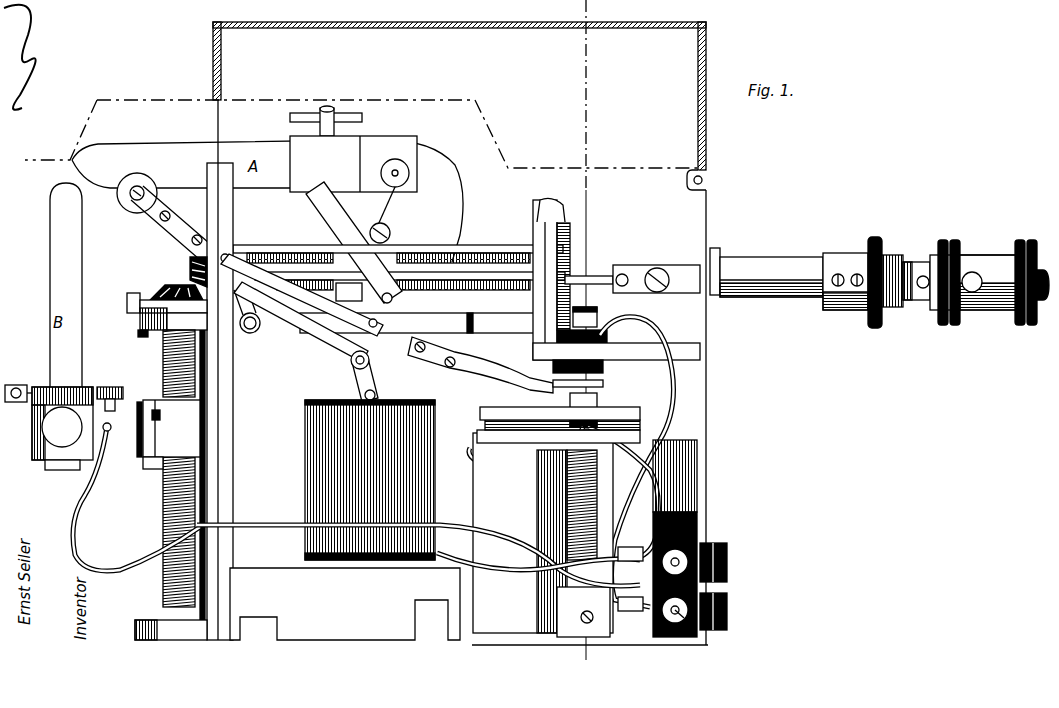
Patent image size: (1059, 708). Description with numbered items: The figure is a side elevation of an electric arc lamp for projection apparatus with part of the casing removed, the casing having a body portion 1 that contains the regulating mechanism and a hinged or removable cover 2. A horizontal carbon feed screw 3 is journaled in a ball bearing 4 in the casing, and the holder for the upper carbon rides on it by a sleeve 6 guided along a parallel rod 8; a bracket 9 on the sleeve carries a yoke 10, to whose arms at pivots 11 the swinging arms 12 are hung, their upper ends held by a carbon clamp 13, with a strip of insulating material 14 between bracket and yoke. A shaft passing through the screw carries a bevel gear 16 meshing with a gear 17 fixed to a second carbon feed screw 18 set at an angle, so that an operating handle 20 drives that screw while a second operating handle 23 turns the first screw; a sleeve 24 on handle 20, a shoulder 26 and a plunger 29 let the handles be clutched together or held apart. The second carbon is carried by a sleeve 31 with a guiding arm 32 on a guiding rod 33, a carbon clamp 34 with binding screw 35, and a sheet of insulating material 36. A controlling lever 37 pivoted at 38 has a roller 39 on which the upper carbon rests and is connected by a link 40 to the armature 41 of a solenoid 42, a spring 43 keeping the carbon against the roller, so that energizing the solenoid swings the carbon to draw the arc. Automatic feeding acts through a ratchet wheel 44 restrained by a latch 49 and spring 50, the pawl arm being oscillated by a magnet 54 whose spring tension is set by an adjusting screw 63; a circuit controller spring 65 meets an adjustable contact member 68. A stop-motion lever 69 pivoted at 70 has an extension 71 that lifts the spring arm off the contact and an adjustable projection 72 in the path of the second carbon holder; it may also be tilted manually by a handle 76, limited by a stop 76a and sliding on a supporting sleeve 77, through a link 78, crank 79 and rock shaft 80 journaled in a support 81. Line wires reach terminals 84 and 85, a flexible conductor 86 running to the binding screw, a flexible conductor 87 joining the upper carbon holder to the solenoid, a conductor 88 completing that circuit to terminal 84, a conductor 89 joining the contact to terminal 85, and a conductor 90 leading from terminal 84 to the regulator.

The body portion 1 is at (707, 470).
The cover 2 is at (487, 29).
The carbon feed screw 3 is at (514, 283).
The ball bearing 4 is at (418, 215).
The sleeve 6 is at (328, 292).
The rod 8 is at (480, 256).
The bracket 9 is at (765, 168).
The yoke 10 is at (62, 375).
The pivots 11 is at (393, 298).
The swinging arms 12 is at (354, 242).
The carbon clamp 13 is at (353, 149).
The insulating material 14 is at (394, 232).
The bevel gear 16 is at (190, 270).
The bevel gear 17 is at (158, 290).
The second carbon feed screw 18 is at (165, 506).
The operating handle 20 is at (1020, 242).
The operating handle 23 is at (952, 242).
The sleeve 24 is at (949, 303).
The shoulder 26 is at (1045, 301).
The plunger 29 is at (972, 290).
The sleeve 31 is at (162, 463).
The guiding arm 32 is at (192, 418).
The guiding rod 33 is at (207, 461).
The carbon clamp 34 is at (78, 396).
The binding screw 35 is at (113, 391).
The insulating material 36 is at (137, 419).
The controlling lever 37 is at (183, 231).
The pivot 38 is at (226, 255).
The roller 39 is at (124, 212).
The link 40 is at (354, 368).
The armature 41 is at (381, 394).
The solenoid 42 is at (370, 480).
The spring 43 is at (389, 219).
The ratchet wheel 44 is at (572, 240).
The latch 49 is at (566, 222).
The spring 50 is at (552, 203).
The magnet 54 is at (604, 500).
The adjusting screw 63 is at (556, 522).
The spring 65 is at (583, 410).
The contact member 68 is at (590, 310).
The lever 69 is at (463, 373).
The pivot 70 is at (375, 330).
The extension 71 is at (603, 384).
The adjustable projection 72 is at (137, 333).
The handle 76 is at (879, 240).
The stop 76a is at (661, 268).
The supporting sleeve 77 is at (777, 258).
The link 78 is at (598, 276).
The crank 79 is at (258, 320).
The rock shaft 80 is at (250, 333).
The support 81 is at (356, 325).
The terminal 84 is at (697, 545).
The terminal 85 is at (688, 623).
The flexible conductor 86 is at (266, 523).
The flexible conductor 87 is at (462, 160).
The conductor 88 is at (505, 570).
The conductor 89 is at (672, 345).
The conductor 90 is at (500, 470).